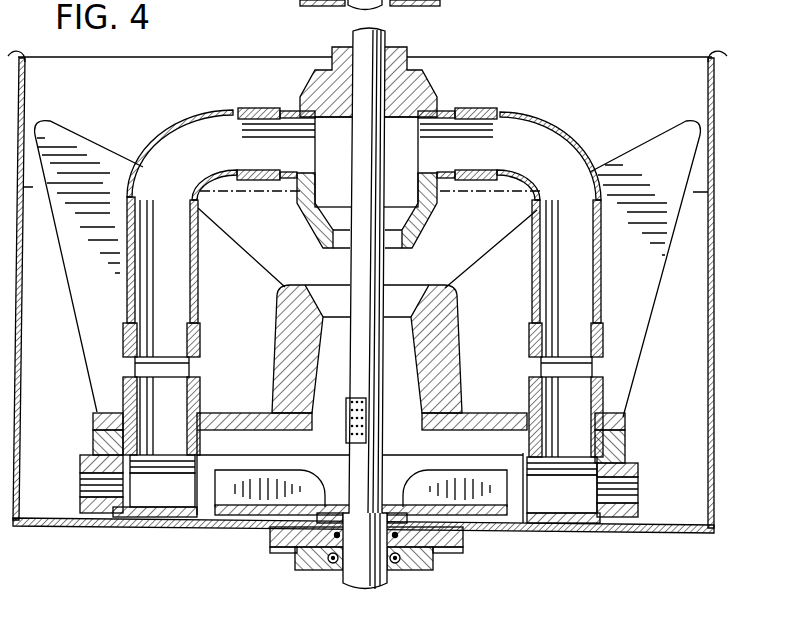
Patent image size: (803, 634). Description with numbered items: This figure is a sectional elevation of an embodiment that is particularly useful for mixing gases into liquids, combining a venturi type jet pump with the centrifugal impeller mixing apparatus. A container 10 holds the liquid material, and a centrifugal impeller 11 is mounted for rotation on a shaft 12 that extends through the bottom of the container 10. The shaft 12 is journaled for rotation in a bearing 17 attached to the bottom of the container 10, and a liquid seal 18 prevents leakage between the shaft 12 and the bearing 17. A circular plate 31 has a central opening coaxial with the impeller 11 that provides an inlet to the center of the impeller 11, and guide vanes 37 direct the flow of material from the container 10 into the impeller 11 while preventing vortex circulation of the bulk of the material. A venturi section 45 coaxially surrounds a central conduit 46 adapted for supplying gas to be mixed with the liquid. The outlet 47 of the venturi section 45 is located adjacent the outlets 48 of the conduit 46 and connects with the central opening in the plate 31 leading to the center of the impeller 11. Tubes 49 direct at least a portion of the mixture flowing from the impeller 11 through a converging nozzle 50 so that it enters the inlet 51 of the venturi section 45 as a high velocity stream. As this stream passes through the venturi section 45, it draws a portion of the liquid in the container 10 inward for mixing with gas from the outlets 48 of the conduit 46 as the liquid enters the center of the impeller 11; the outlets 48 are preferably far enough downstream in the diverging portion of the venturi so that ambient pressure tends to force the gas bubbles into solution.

The container 10 is at (714, 302).
The centrifugal impeller 11 is at (488, 515).
The shaft 12 is at (370, 590).
The bearing 17 is at (337, 5).
The liquid seal 18 is at (430, 2).
The circular plate 31 is at (483, 412).
The guide vanes 37 is at (100, 163).
The venturi section 45 is at (293, 318).
The central conduit 46 is at (372, 164).
The outlet of venturi section 47 is at (352, 448).
The outlets of conduit 48 is at (377, 427).
The tubes 49 is at (600, 273).
The converging nozzle 50 is at (422, 226).
The inlet of venturi section 51 is at (330, 285).